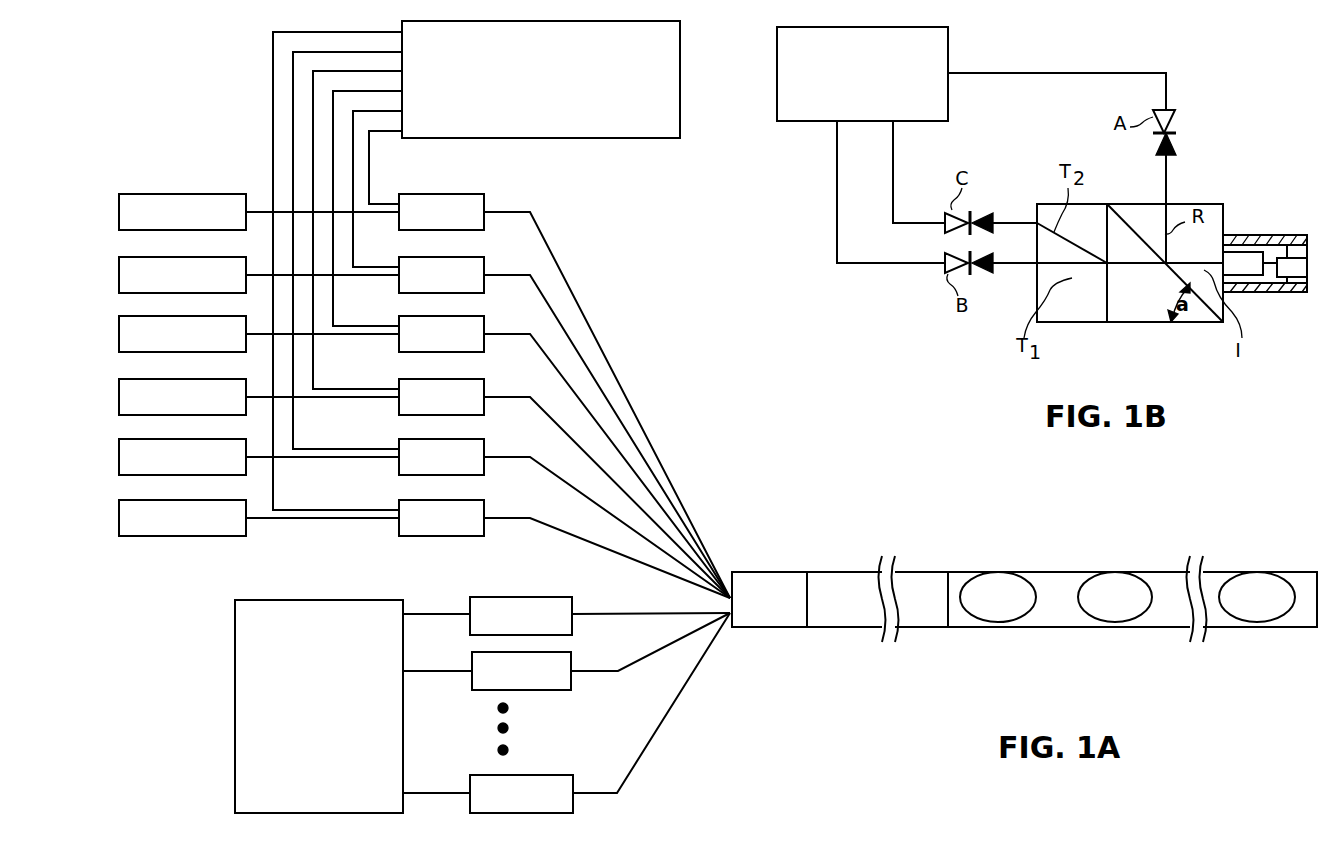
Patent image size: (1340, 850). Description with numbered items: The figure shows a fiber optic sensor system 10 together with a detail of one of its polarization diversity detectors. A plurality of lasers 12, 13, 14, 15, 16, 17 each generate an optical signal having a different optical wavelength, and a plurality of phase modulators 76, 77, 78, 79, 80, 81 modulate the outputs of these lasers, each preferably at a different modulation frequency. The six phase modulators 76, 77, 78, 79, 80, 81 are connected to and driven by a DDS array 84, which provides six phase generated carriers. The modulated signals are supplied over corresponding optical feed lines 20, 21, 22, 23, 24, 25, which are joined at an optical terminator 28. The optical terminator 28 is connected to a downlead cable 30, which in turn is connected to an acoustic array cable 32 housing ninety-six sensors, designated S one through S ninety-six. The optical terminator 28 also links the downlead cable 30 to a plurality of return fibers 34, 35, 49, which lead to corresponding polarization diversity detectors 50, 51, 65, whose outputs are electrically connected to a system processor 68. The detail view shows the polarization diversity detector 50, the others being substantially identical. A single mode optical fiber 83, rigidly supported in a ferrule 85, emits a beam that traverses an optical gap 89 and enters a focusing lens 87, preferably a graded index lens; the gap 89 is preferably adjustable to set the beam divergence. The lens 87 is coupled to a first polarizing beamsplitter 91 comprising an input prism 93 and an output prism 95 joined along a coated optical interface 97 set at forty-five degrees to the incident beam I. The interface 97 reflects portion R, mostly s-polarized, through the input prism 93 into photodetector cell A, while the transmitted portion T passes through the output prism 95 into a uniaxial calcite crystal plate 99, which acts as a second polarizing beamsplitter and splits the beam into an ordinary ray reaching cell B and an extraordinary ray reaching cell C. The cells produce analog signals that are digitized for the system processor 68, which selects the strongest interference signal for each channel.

In FIG. 1A, the fiber optic sensor system 10 is at (778, 710).
In FIG. 1A, the laser 12 is at (119, 518).
In FIG. 1A, the laser 13 is at (119, 457).
In FIG. 1A, the laser 14 is at (119, 397).
In FIG. 1A, the laser 15 is at (119, 334).
In FIG. 1A, the laser 16 is at (119, 275).
In FIG. 1A, the laser 17 is at (119, 212).
In FIG. 1A, the optical feed line 20 is at (610, 550).
In FIG. 1A, the optical feed line 21 is at (580, 492).
In FIG. 1A, the optical feed line 22 is at (578, 445).
In FIG. 1A, the optical feed line 23 is at (563, 378).
In FIG. 1A, the optical feed line 24 is at (560, 323).
In FIG. 1A, the optical feed line 25 is at (565, 272).
In FIG. 1A, the optical terminator 28 is at (769, 628).
In FIG. 1A, the downlead cable 30 is at (839, 628).
In FIG. 1A, the acoustic array cable 32 is at (1041, 628).
In FIG. 1A, the return fiber 34 is at (622, 612).
In FIG. 1A, the return fiber 35 is at (626, 672).
In FIG. 1A, the return fiber 49 is at (659, 740).
In FIG. 1A, the polarization diversity detector 50 is at (470, 601).
In FIG. 1B, the polarization diversity detector 50 is at (965, 380).
In FIG. 1A, the polarization diversity detector 51 is at (472, 686).
In FIG. 1A, the polarization diversity detector 65 is at (580, 805).
In FIG. 1A, the system processor 68 is at (235, 628).
In FIG. 1B, the system processor 68 is at (948, 38).
In FIG. 1A, the phase modulator 76 is at (484, 506).
In FIG. 1A, the phase modulator 77 is at (484, 445).
In FIG. 1A, the phase modulator 78 is at (484, 385).
In FIG. 1A, the phase modulator 79 is at (484, 322).
In FIG. 1A, the phase modulator 80 is at (484, 263).
In FIG. 1A, the phase modulator 81 is at (484, 200).
In FIG. 1B, the single mode optical fiber 83 is at (1294, 246).
In FIG. 1A, the DDS array 84 is at (636, 138).
In FIG. 1B, the ferrule 85 is at (1283, 292).
In FIG. 1B, the focusing lens 87 is at (1239, 251).
In FIG. 1B, the optical gap 89 is at (1276, 244).
In FIG. 1B, the first polarizing beamsplitter 91 is at (1212, 360).
In FIG. 1B, the input prism 93 is at (1185, 204).
In FIG. 1B, the output prism 95 is at (1150, 322).
In FIG. 1B, the coated optical interface 97 is at (1130, 228).
In FIG. 1B, the uniaxial calcite crystal plate 99 is at (1074, 322).